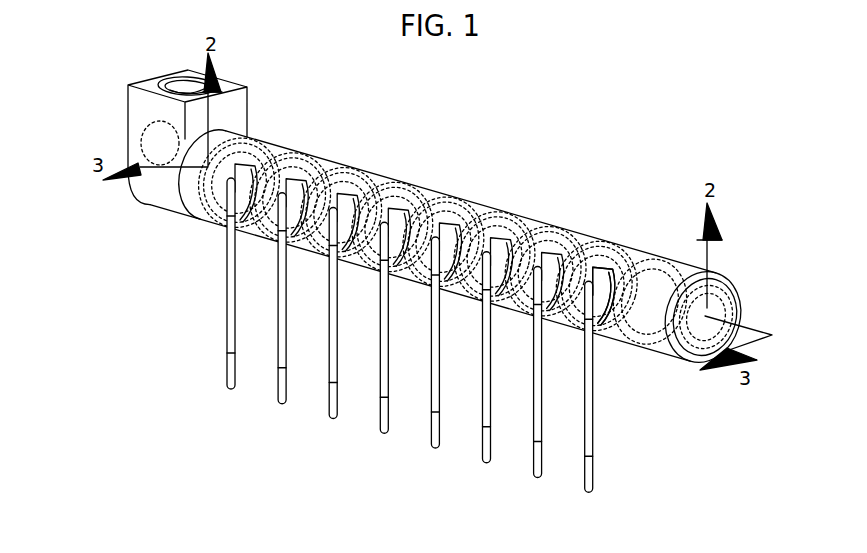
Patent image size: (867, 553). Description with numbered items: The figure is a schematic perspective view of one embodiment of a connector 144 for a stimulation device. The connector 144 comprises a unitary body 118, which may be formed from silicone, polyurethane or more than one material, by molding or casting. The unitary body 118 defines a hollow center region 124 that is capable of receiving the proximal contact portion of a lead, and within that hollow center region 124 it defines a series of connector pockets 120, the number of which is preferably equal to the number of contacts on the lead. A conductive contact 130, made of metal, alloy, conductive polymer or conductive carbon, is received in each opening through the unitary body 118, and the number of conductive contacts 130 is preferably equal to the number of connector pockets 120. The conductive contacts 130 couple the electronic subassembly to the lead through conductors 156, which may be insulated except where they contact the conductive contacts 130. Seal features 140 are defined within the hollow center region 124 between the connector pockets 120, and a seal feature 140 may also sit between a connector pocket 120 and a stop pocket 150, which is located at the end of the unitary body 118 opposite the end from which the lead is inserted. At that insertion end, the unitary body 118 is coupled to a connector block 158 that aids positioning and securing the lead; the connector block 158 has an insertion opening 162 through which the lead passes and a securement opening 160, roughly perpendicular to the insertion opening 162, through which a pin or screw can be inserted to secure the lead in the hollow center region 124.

The unitary body 118 is at (450, 251).
The connector pockets 120 is at (418, 200).
The hollow center region 124 is at (273, 183).
The conductive contact 130 is at (612, 318).
The seal features 140 is at (523, 260).
The connector 144 is at (598, 232).
The stop pocket 150 is at (665, 290).
The conductors 156 is at (590, 400).
The connector block 158 is at (153, 116).
The securement opening 160 is at (190, 92).
The insertion opening 162 is at (143, 138).